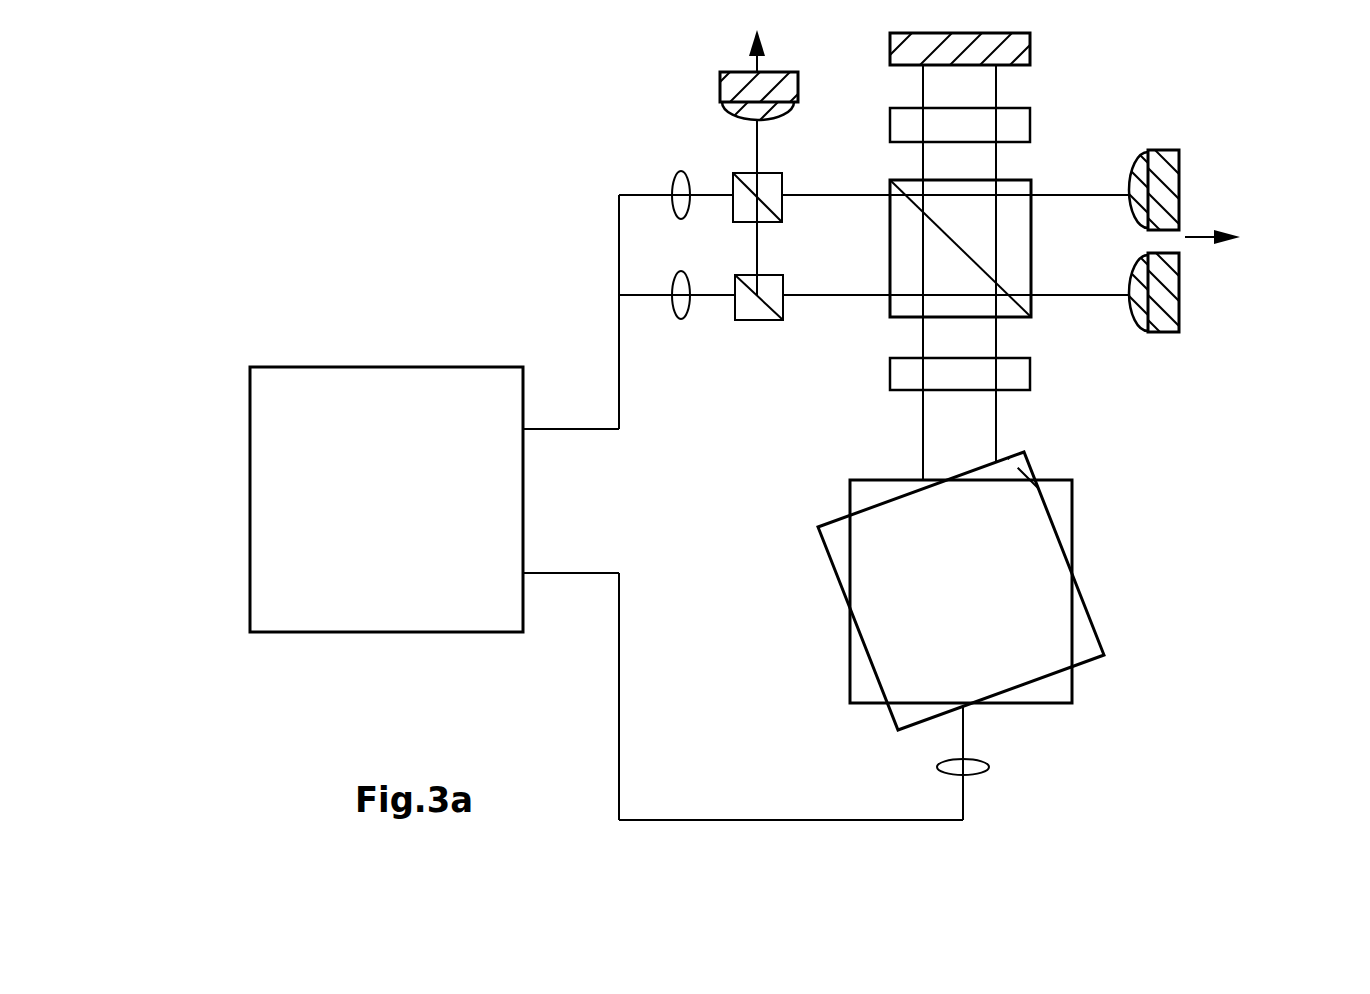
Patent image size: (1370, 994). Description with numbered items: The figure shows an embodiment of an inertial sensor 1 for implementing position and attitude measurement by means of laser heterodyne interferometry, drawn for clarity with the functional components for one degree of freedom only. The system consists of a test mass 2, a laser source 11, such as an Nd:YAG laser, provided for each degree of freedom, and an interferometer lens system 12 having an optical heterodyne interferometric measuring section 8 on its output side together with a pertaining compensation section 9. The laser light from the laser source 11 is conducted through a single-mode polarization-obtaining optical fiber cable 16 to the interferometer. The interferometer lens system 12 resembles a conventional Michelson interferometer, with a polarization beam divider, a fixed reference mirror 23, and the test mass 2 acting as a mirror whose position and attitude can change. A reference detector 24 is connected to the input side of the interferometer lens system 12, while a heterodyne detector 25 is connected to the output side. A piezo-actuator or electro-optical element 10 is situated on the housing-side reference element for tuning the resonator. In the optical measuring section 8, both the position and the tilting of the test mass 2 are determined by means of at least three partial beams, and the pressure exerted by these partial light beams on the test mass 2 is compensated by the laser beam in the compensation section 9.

The inertial sensor 1 is at (452, 206).
The laser source 11 is at (486, 365).
The optical fiber cable 16 is at (598, 432).
The reference detector 24 is at (720, 88).
The electro-optical element 10 is at (906, 277).
The fixed reference mirror 23 is at (1030, 57).
The heterodyne detector 25 is at (1208, 203).
The interferometer lens system 12 is at (1073, 325).
The optical measuring section 8 is at (922, 447).
The test mass 2 is at (1063, 542).
The compensation section 9 is at (964, 735).